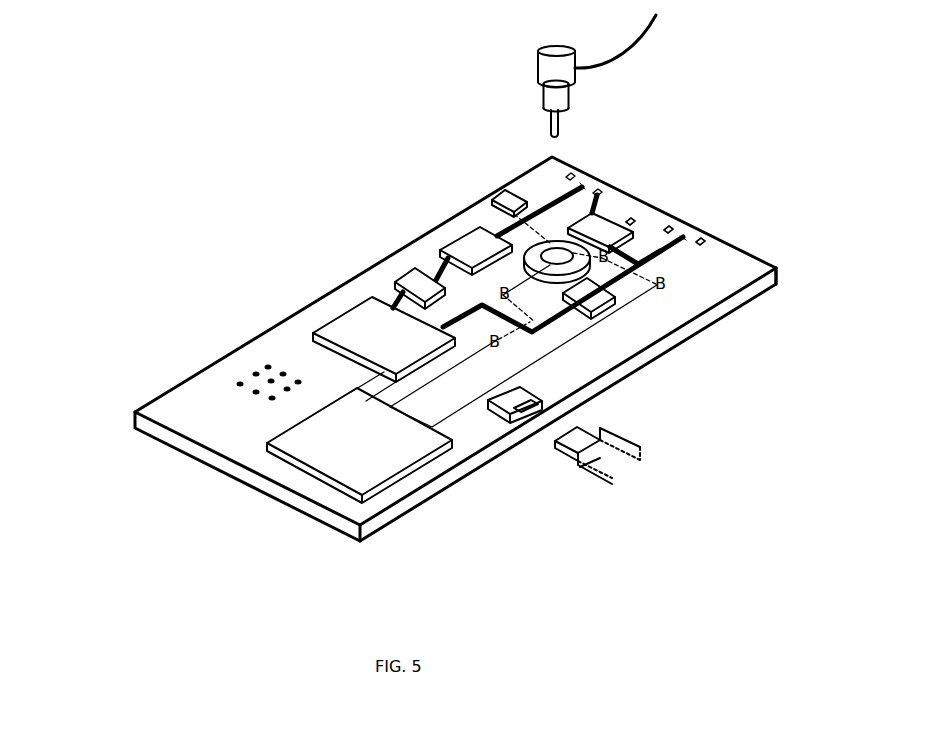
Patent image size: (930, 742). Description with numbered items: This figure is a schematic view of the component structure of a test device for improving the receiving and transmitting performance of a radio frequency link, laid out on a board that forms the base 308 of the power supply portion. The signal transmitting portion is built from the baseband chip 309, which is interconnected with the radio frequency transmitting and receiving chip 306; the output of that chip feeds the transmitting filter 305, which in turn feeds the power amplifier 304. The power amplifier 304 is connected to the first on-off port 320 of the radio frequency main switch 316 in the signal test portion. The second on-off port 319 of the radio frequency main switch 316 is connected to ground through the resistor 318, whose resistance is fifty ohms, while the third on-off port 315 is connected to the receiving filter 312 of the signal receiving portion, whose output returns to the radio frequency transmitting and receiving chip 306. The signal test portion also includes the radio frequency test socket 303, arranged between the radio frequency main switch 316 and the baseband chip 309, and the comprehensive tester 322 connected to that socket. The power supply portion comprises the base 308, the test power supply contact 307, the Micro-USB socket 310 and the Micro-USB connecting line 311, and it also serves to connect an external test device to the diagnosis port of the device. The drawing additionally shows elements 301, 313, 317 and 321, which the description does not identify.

The probe 301 is at (537, 72).
The radio frequency test socket 303 is at (553, 255).
The power amplifier 304 is at (448, 245).
The transmitting filter 305 is at (400, 280).
The radio frequency transmitting and receiving chip 306 is at (330, 320).
The test power supply contact 307 is at (250, 372).
The base 308 is at (137, 420).
The baseband chip 309 is at (400, 480).
The Micro-USB socket 310 is at (500, 418).
The Micro-USB connecting line 311 is at (640, 447).
The receiving filter 312 is at (615, 310).
The trace 313 is at (660, 287).
The third on-off port 315 is at (778, 282).
The radio frequency main switch 316 is at (690, 250).
The pad 317 is at (700, 242).
The resistor 318 is at (668, 230).
The second on-off port 319 is at (632, 222).
The first on-off port 320 is at (582, 213).
The pad 321 is at (583, 185).
The comprehensive tester 322 is at (503, 187).